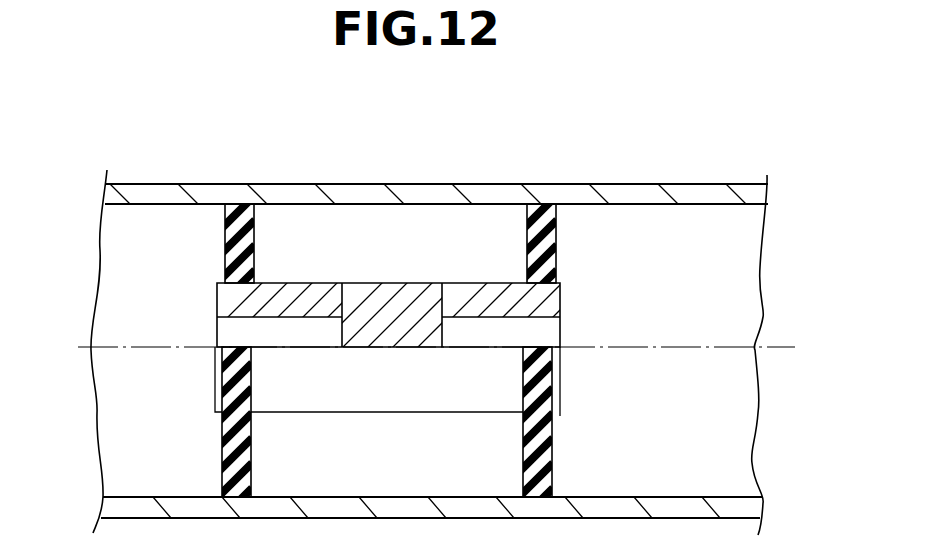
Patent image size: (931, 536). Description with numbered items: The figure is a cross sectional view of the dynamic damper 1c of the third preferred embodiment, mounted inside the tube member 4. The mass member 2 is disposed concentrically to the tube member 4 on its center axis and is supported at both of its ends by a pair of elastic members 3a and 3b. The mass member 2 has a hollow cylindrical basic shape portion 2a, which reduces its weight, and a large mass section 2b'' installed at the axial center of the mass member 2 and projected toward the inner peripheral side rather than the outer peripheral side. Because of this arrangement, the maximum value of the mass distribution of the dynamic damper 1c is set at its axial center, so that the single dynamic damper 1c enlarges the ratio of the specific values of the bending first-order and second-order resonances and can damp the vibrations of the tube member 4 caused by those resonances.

The dynamic damper 1c is at (342, 284).
The mass member 2 is at (563, 299).
The basic shape portion 2a is at (470, 283).
The large mass section 2b'' is at (420, 316).
The elastic member 3a is at (232, 258).
The elastic member 3b is at (546, 252).
The tube member 4 is at (629, 197).